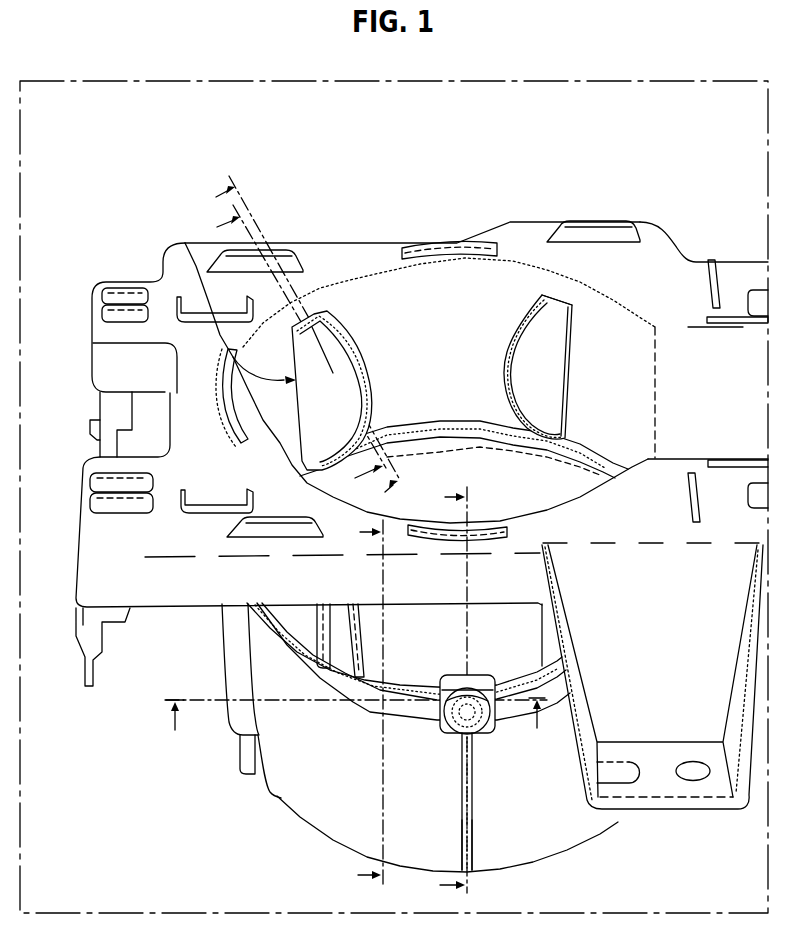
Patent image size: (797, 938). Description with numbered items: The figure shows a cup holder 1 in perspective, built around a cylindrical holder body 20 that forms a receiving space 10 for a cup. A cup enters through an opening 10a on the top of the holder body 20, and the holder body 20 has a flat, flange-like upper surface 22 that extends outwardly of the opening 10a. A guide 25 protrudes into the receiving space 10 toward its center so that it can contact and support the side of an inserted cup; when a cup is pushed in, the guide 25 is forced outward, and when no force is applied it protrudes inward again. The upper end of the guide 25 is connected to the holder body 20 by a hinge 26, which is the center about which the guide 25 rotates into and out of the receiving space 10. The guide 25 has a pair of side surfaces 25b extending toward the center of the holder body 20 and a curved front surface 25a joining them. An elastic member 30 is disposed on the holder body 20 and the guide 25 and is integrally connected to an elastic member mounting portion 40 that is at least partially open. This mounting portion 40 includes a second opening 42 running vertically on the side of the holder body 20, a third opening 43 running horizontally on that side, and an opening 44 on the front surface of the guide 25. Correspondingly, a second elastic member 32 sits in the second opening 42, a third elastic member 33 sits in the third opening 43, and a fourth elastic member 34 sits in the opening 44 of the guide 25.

The cup holder 1 is at (731, 129).
The receiving space 10 is at (434, 334).
The opening 10a is at (377, 281).
The holder body 20 is at (297, 792).
The upper surface 22 is at (327, 252).
The guide 25 is at (185, 243).
The front surface 25a is at (657, 258).
The side surfaces 25b is at (550, 373).
The hinge 26 is at (543, 297).
The elastic member 30 is at (455, 677).
The second elastic member 32 is at (496, 816).
The third elastic member 33 is at (280, 663).
The fourth elastic member 34 is at (518, 343).
The elastic member mounting portion 40 is at (464, 322).
The second opening 42 is at (473, 823).
The third opening 43 is at (378, 676).
The opening 44 is at (332, 390).